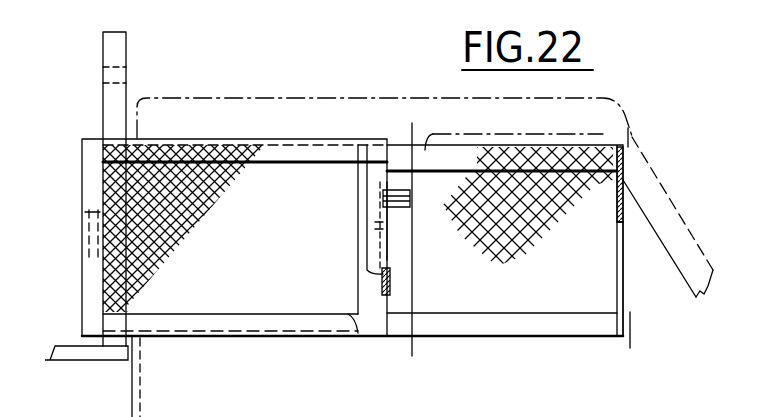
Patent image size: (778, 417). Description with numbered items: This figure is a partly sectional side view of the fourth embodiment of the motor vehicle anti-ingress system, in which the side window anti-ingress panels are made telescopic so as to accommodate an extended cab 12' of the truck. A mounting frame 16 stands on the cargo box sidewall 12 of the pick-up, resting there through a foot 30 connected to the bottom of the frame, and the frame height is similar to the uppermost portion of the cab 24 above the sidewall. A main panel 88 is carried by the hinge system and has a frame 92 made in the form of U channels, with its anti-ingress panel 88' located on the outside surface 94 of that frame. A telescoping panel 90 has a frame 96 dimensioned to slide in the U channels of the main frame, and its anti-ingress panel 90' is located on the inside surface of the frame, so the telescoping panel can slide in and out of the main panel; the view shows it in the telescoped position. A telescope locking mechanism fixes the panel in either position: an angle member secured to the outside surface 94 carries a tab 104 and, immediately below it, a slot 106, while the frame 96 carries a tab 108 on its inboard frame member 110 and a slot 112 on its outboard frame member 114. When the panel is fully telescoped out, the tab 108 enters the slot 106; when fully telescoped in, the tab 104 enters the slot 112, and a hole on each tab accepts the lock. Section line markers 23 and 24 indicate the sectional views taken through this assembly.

The cargo box sidewall 12 is at (111, 376).
The extended cab 12' is at (425, 169).
The mounting frame 16 is at (128, 93).
The section line 23 is at (630, 137).
The cab 24 is at (412, 127).
The foot 30 is at (66, 344).
The main panel 88 is at (200, 228).
The anti-ingress panel 88' is at (178, 228).
The telescoping panel 90 is at (545, 188).
The anti-ingress panel 90' is at (528, 218).
The frame 92 is at (271, 313).
The outside surface 94 is at (265, 329).
The frame 96 is at (545, 306).
The tab 104 is at (413, 169).
The slot 106 is at (383, 225).
The tab 108 is at (399, 208).
The inboard frame member 110 is at (386, 300).
The slot 112 is at (627, 195).
The outboard frame member 114 is at (625, 291).